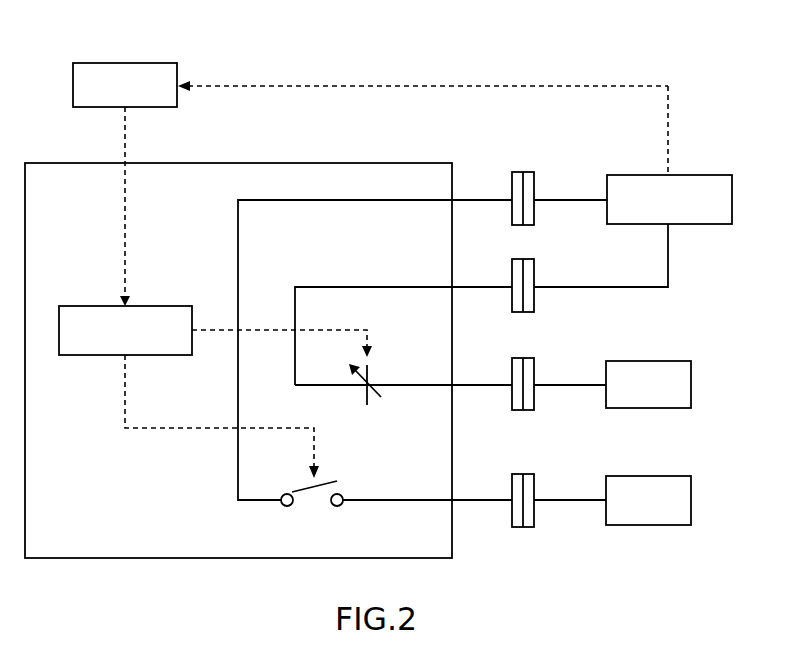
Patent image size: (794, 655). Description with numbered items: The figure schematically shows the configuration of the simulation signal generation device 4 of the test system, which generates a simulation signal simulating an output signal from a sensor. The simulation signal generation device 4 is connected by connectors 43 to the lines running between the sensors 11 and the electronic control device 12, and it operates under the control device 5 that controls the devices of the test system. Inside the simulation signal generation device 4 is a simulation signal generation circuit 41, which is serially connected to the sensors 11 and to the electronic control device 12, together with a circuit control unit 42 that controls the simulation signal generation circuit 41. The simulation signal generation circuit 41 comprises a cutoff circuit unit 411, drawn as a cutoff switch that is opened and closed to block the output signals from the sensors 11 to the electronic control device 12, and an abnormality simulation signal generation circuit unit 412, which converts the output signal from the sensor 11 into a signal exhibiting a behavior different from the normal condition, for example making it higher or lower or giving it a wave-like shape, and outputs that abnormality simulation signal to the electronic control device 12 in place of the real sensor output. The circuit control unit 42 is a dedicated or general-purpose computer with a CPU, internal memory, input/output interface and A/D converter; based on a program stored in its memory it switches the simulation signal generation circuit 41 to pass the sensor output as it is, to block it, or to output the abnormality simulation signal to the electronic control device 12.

The simulation signal generation device 4 is at (46, 162).
The control device 5 is at (90, 62).
The sensor 11 is at (693, 389).
The electronic control device 12 is at (735, 200).
The simulation signal generation circuit 41 is at (206, 501).
The circuit control unit 42 is at (76, 305).
The connector 43 is at (536, 184).
The cutoff circuit unit 411 is at (386, 504).
The abnormality simulation signal generation circuit unit 412 is at (413, 383).